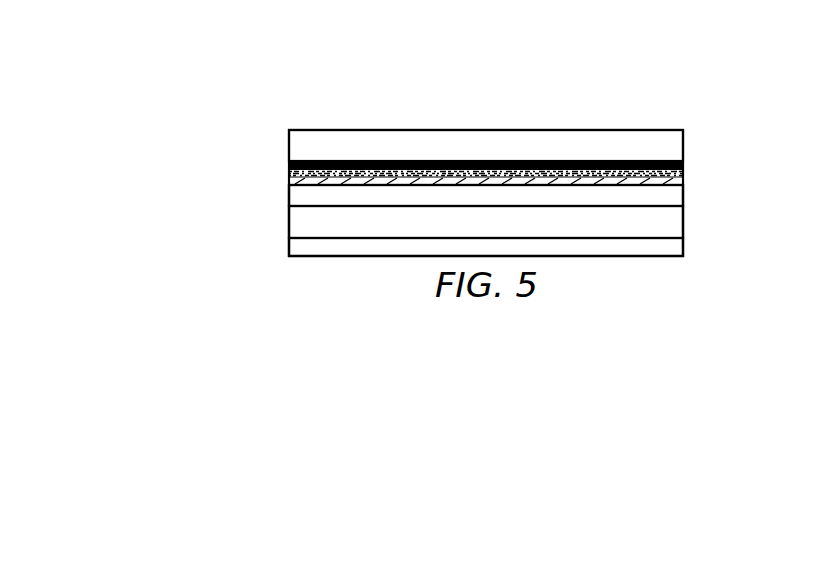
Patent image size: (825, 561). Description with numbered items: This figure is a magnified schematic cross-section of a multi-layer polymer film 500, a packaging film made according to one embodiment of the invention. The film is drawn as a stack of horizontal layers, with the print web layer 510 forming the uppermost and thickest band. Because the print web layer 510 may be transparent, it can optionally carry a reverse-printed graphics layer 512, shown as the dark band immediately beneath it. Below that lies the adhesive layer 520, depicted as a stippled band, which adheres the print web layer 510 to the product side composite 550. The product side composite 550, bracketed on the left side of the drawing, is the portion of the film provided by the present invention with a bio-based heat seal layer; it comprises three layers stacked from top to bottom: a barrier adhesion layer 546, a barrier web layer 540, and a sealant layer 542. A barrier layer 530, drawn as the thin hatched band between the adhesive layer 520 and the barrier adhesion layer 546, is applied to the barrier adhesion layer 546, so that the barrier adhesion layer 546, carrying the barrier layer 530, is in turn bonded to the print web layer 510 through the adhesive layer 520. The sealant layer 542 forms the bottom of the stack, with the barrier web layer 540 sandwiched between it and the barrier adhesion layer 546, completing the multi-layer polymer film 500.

The multi-layer polymer film 500 is at (391, 93).
The print web layer 510 is at (289, 147).
The reverse-printed graphics layer 512 is at (683, 161).
The adhesive layer 520 is at (683, 174).
The barrier layer 530 is at (683, 182).
The barrier adhesion layer 546 is at (683, 195).
The barrier web layer 540 is at (683, 218).
The sealant layer 542 is at (683, 245).
The product side composite 550 is at (281, 188).